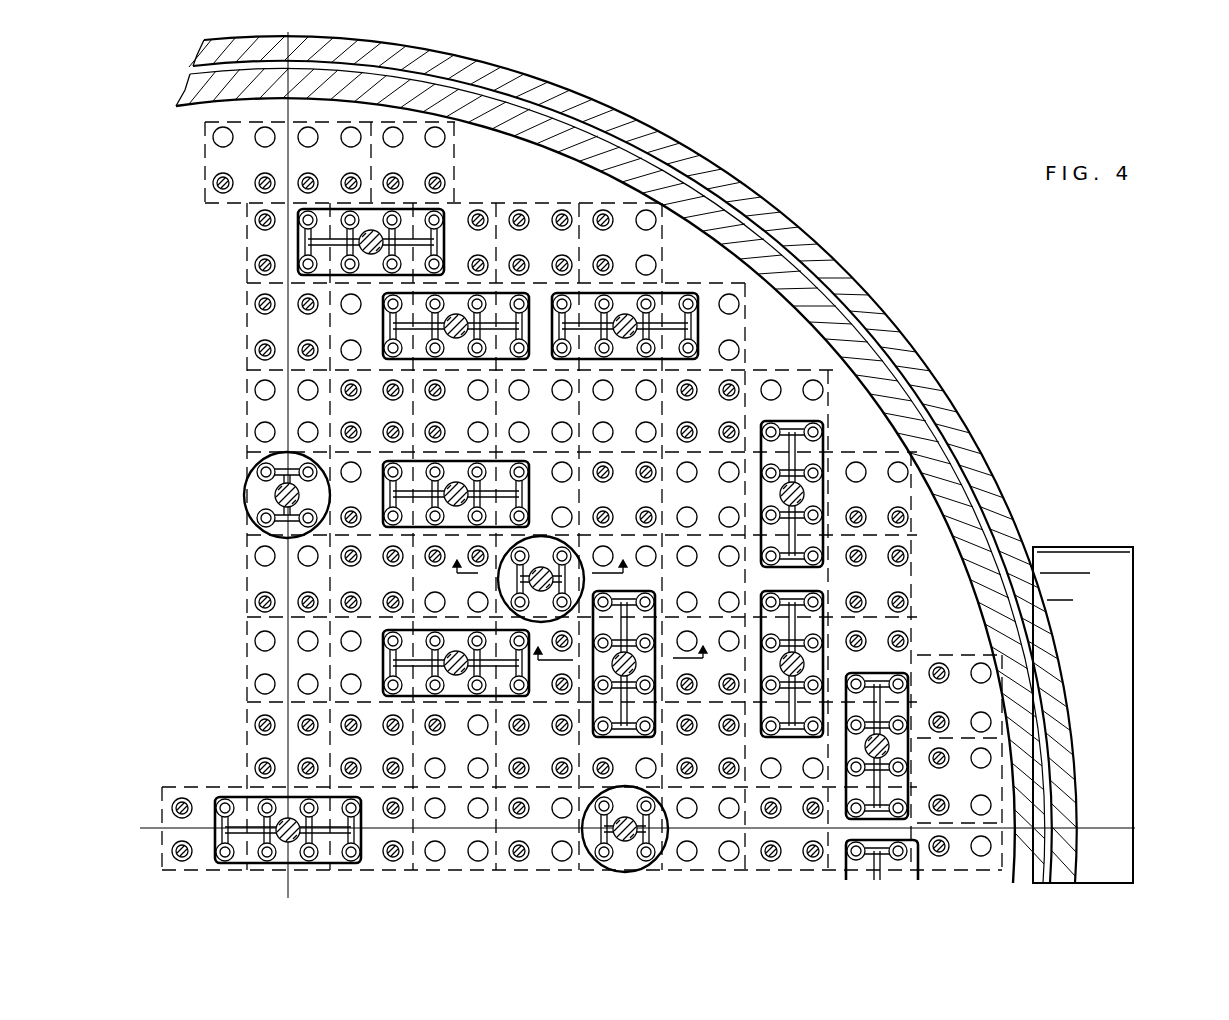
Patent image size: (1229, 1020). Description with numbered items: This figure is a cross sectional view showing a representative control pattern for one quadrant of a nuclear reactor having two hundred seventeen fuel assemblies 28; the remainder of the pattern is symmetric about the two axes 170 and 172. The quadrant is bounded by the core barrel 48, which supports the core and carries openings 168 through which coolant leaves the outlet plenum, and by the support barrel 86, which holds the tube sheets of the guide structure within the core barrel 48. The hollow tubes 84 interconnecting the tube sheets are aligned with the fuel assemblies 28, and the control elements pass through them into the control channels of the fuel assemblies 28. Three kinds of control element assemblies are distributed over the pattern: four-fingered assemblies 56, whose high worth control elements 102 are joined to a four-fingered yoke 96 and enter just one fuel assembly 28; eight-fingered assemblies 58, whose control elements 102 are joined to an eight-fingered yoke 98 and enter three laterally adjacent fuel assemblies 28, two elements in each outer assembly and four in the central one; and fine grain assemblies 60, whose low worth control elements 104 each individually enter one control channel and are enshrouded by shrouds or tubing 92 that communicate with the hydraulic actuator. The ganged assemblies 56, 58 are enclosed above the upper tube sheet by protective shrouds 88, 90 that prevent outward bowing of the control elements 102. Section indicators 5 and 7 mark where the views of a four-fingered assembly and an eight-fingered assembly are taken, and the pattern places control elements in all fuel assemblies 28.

The axis of symmetry 172 is at (290, 34).
The core barrel 48 is at (930, 376).
The support barrel 86 is at (915, 431).
The openings in the core support barrel 168 is at (1135, 576).
The axis of symmetry 170 is at (1137, 829).
The fuel assemblies 28 is at (258, 406).
The hollow tubes 84 is at (212, 139).
The shrouds or tubing 92 is at (215, 182).
The control elements 104 is at (222, 188).
The fine grain control element assemblies 60 is at (305, 598).
The 4-fingered control element assembly 56 is at (278, 534).
The 8-fingered control element assembly 58 is at (337, 252).
The control element shroud 90 is at (531, 537).
The 8-fingered yoke 98 is at (445, 222).
The control elements 102 is at (747, 520).
The control element shroud 88 is at (428, 676).
The 4-fingered yoke 96 is at (262, 485).
The section line 5- 5 is at (540, 555).
The section line 7- 7 is at (619, 643).